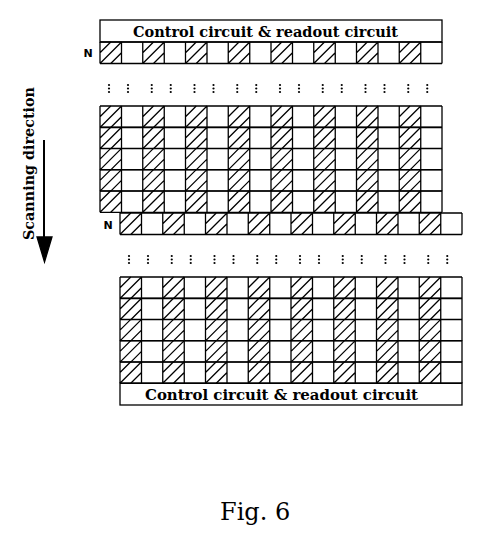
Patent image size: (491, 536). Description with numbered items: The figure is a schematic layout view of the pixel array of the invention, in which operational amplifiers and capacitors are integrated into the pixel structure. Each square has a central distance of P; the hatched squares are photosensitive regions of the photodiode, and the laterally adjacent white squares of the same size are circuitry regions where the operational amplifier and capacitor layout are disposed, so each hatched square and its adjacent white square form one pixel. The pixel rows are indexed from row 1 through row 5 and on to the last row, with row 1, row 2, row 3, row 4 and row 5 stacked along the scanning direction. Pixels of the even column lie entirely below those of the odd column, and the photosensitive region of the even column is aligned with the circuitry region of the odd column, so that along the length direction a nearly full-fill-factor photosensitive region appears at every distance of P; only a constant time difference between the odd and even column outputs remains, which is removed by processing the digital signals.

The pixel row 1 is at (272, 287).
The pixel row 2 is at (272, 266).
The pixel row 3 is at (272, 244).
The pixel row 4 is at (272, 223).
The pixel row 5 is at (272, 202).